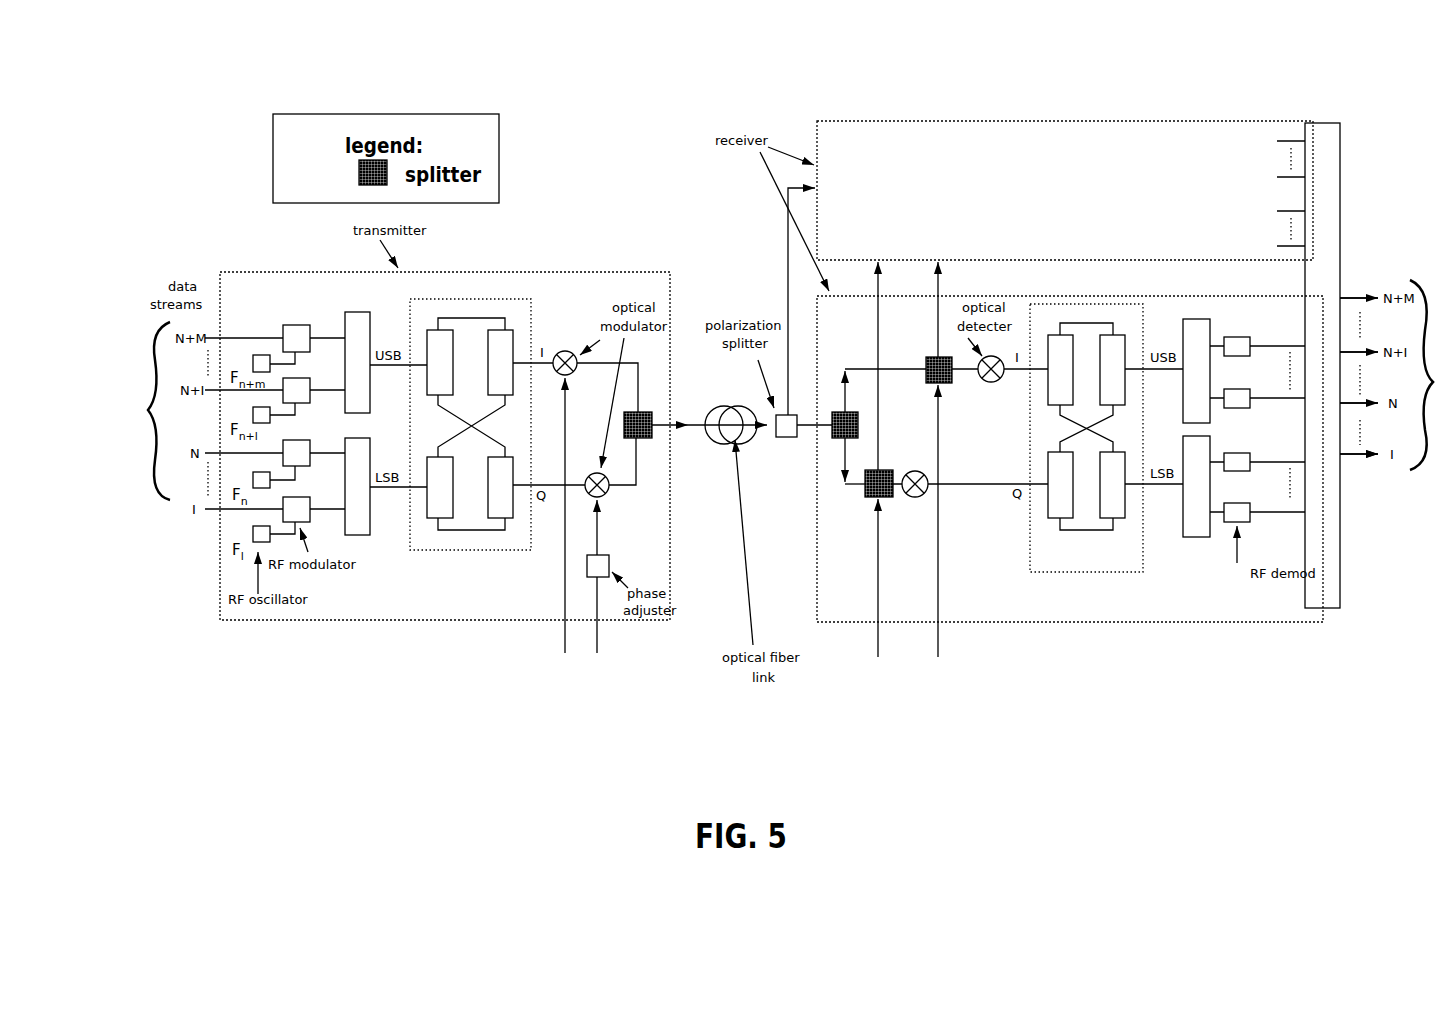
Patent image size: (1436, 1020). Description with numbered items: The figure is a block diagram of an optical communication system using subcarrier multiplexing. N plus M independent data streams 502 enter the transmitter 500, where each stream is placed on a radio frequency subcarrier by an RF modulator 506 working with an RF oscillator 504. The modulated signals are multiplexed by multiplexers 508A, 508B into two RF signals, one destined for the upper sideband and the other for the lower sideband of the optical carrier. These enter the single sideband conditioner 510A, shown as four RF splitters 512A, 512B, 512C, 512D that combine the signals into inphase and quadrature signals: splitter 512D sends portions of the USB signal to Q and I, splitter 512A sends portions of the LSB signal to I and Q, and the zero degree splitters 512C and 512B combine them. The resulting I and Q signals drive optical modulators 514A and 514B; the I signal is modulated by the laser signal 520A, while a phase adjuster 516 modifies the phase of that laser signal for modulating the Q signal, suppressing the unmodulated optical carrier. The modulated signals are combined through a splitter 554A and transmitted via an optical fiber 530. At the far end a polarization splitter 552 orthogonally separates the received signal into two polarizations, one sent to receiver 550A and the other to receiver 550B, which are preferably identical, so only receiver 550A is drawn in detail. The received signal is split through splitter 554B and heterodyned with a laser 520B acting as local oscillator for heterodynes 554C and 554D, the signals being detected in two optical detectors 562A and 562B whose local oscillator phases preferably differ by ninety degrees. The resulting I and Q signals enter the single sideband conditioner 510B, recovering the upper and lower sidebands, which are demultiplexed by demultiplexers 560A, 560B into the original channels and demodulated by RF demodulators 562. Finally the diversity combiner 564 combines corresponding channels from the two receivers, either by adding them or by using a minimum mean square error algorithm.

The transmitter 500 is at (268, 620).
The data streams 502 is at (142, 411).
The RF oscillator 504 is at (259, 355).
The RF modulator 506 is at (296, 325).
The multiplexer 508A is at (357, 312).
The multiplexer 508B is at (365, 535).
The single sideband conditioner 510A is at (497, 454).
The single sideband conditioner 510B is at (1062, 572).
The RF splitter 512A is at (430, 518).
The RF splitter 512B is at (508, 518).
The RF splitter 512C is at (511, 330).
The RF splitter 512D is at (432, 330).
The optical modulator 514A is at (565, 351).
The optical modulator 514B is at (607, 494).
The phase adjuster 516 is at (603, 578).
The laser signal 520A is at (566, 638).
The laser 520B is at (877, 638).
The optical fiber 530 is at (699, 418).
The receiver 550A is at (1163, 625).
The receiver 550B is at (1155, 121).
The polarization splitter 552 is at (786, 438).
The splitter 554A is at (646, 440).
The splitter 554B is at (838, 440).
The heterodyne 554C is at (868, 497).
The heterodyne 554D is at (947, 357).
The demultiplexer 560A is at (1190, 319).
The demultiplexer 560B is at (1195, 537).
The RF demodulator 562 is at (1245, 337).
The optical detector 562A is at (918, 497).
The optical detector 562B is at (997, 358).
The diversity combiner 564 is at (1325, 123).